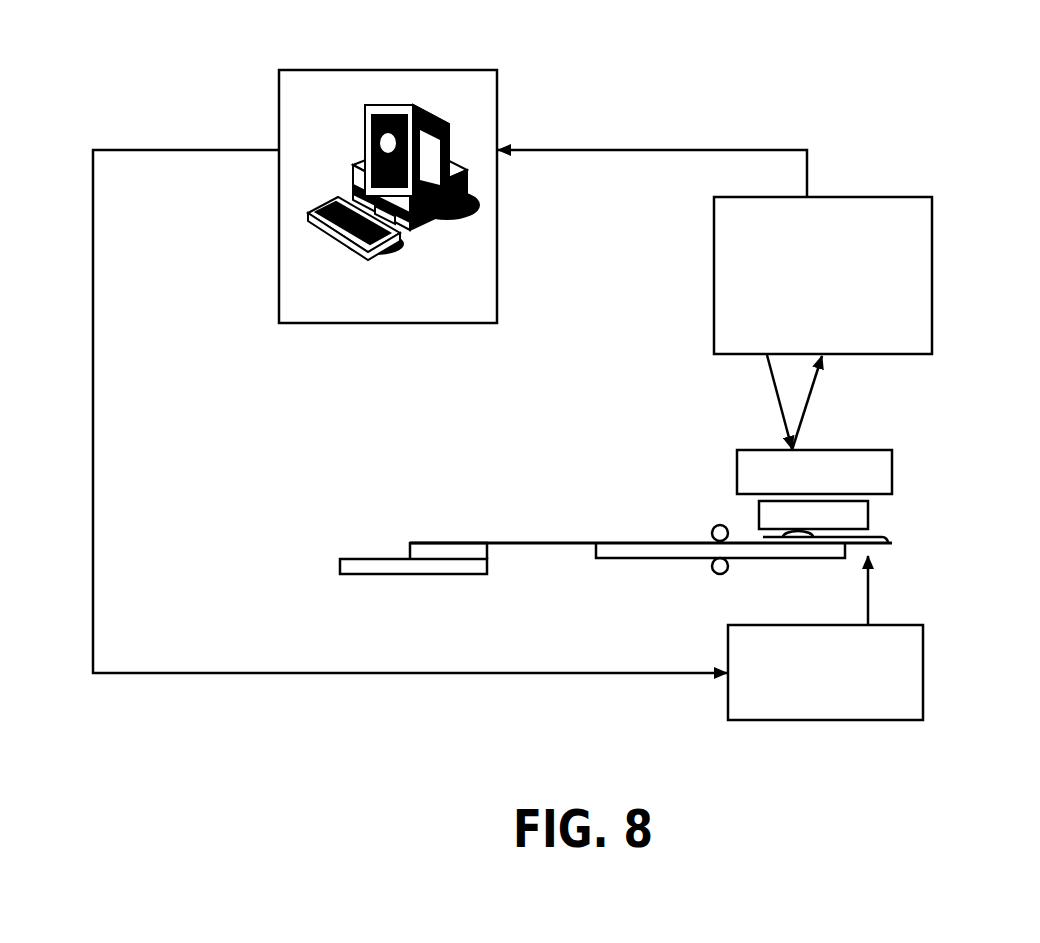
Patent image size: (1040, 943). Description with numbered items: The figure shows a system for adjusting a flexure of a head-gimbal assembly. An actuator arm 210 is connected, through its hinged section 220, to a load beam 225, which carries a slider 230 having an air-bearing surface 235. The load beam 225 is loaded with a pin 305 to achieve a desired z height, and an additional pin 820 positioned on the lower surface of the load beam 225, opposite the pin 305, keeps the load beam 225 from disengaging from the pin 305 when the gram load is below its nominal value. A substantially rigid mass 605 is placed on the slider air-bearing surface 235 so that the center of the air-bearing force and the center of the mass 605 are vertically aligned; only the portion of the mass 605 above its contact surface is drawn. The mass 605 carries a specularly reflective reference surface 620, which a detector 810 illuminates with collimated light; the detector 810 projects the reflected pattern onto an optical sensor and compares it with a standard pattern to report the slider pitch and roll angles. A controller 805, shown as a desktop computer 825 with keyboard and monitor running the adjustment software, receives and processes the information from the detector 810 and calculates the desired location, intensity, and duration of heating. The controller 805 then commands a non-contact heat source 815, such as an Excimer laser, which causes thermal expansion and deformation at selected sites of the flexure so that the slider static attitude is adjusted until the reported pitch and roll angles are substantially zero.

The controller 805 is at (388, 178).
The desktop computer 825 is at (474, 157).
The detector 810 is at (949, 277).
The reference surface 620 is at (760, 446).
The substantially rigid mass 605 is at (903, 457).
The air-bearing surface 235 is at (797, 497).
The slider 230 is at (876, 515).
The hinged section 220 is at (542, 538).
The load beam 225 is at (642, 537).
The actuator arm 210 is at (414, 581).
The pin 305 is at (712, 523).
The additional pin 820 is at (709, 573).
The non-contact heat source 815 is at (934, 648).